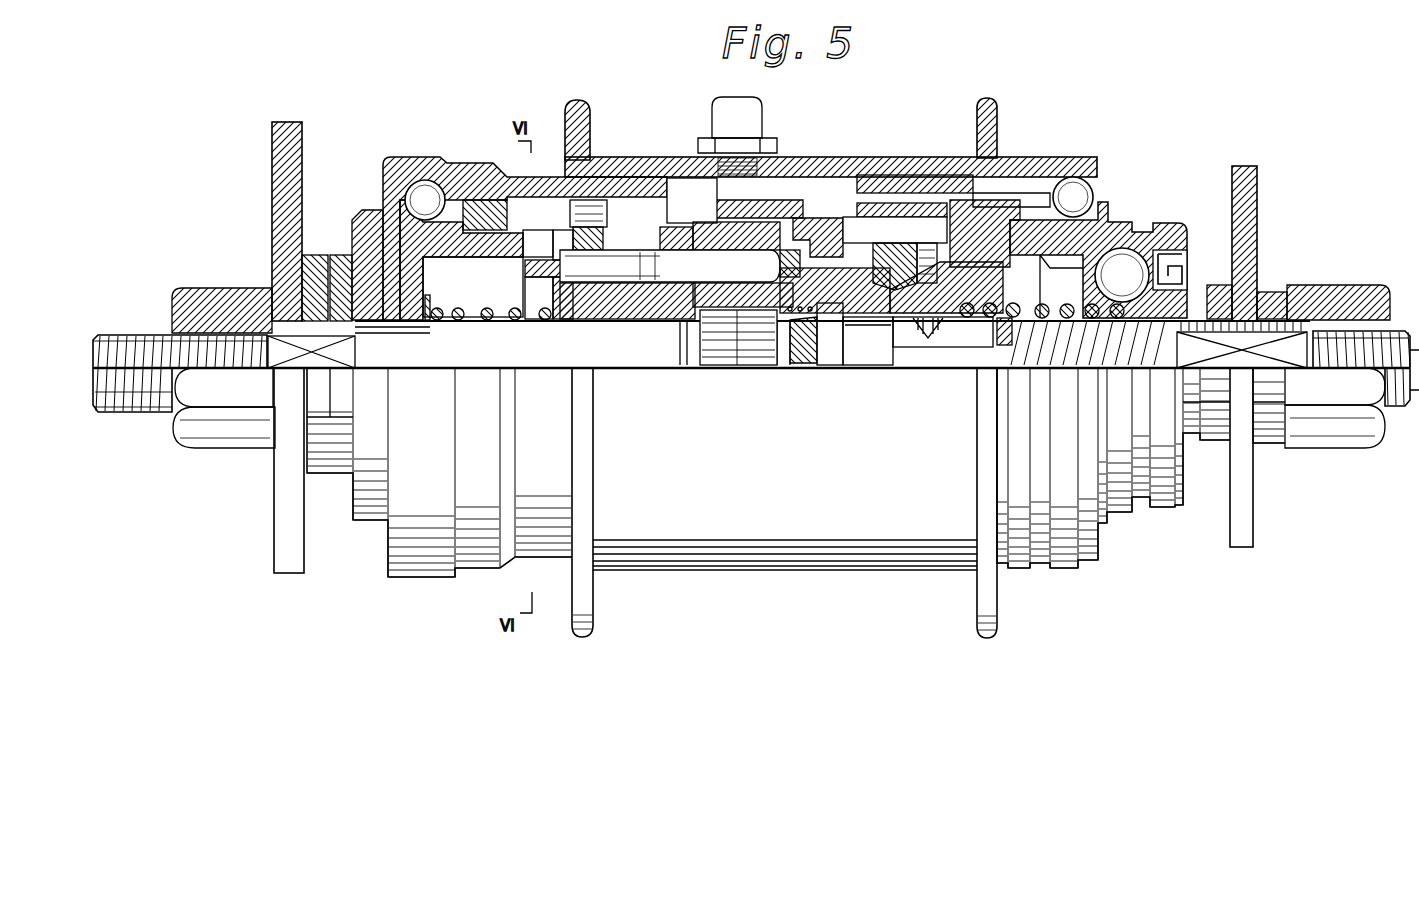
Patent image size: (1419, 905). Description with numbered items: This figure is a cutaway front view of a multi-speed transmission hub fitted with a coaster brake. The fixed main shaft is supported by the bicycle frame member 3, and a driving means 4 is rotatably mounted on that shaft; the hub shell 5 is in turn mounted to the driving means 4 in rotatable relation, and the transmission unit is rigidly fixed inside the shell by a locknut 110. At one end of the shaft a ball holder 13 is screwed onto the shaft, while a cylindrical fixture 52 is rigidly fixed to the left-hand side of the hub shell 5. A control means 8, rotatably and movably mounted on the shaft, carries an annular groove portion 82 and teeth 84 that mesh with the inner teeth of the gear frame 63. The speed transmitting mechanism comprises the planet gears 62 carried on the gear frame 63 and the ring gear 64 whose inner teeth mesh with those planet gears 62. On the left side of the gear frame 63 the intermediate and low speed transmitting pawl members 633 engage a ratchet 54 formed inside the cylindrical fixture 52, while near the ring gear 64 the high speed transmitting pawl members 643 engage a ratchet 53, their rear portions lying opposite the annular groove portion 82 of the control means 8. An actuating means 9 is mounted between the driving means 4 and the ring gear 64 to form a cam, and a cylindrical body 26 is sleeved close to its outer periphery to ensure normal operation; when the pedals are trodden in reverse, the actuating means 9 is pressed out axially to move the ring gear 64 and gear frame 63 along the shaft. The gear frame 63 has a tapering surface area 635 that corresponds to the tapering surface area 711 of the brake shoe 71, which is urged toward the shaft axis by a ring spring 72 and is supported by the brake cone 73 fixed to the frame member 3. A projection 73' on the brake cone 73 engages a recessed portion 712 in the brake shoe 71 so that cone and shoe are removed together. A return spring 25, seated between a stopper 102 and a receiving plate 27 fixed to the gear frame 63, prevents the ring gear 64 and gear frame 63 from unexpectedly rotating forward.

The bicycle frame member 3 is at (310, 120).
The locknut 110 is at (335, 260).
The brake cone 73 is at (420, 174).
The brake shoe 71 is at (487, 210).
The recessed portion 712 is at (508, 227).
The projection 73' is at (565, 355).
The tapering surface area 711 is at (593, 200).
The ring spring 72 is at (528, 228).
The tapering surface area 635 is at (567, 215).
The planet gears 62 is at (760, 197).
The gear frame 63 is at (797, 230).
The ring gear 64 is at (835, 217).
The high speed transmitting pawl members 643 is at (892, 205).
The ratchet 53 is at (953, 153).
The hub shell 5 is at (957, 153).
The actuating means 9 is at (1043, 200).
The cylindrical body 26 is at (1060, 175).
The driving means 4 is at (1113, 233).
The ball holder 13 is at (1183, 297).
The cylindrical fixture 52 is at (658, 188).
The ratchet 54 is at (670, 266).
The stopper 102 is at (437, 319).
The return spring 25 is at (514, 319).
The receiving plate 27 is at (560, 313).
The intermediate and low speed transmitting pawl members 633 is at (637, 242).
The teeth 84 is at (742, 323).
The annular groove portion 82 is at (897, 288).
The control means 8 is at (937, 313).